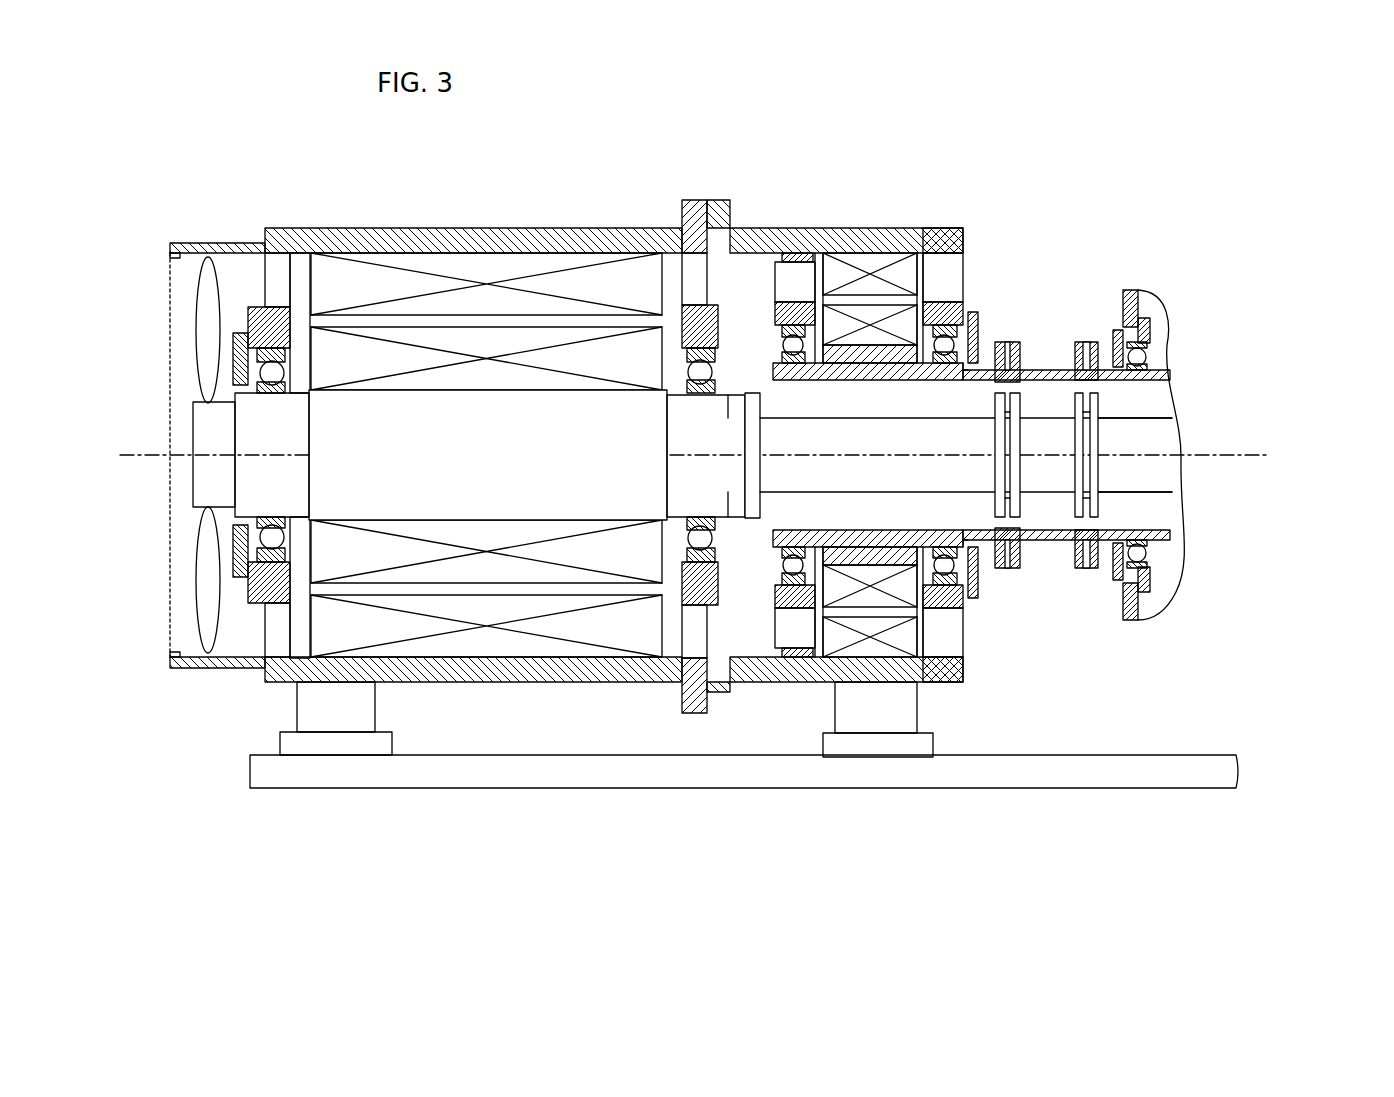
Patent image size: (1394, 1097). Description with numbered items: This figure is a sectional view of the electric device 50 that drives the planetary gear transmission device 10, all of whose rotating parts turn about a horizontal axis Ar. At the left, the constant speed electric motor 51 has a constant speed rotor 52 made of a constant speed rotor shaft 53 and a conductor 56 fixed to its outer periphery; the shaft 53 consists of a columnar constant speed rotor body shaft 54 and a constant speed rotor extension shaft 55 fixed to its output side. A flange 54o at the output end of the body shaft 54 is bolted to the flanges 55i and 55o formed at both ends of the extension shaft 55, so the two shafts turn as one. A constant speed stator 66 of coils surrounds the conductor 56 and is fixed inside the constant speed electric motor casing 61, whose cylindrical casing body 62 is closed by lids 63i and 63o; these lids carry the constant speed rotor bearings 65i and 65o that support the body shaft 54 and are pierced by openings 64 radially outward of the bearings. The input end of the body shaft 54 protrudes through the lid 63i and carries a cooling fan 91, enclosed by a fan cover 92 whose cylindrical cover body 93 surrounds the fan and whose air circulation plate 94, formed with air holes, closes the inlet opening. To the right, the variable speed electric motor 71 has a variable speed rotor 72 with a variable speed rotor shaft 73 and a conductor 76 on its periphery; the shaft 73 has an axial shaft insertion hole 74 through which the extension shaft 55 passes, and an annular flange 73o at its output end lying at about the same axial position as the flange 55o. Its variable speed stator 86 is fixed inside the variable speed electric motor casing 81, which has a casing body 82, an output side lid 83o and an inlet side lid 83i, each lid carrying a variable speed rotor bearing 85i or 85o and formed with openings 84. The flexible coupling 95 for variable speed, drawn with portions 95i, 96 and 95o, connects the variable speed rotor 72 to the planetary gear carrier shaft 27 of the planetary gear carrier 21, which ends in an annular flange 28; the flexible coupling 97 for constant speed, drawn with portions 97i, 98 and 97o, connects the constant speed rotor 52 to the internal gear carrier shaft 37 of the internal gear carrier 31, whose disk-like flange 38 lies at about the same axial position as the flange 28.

The transmission device 10 is at (1192, 576).
The planetary gear carrier 21 is at (1162, 368).
The planetary gear carrier shaft 27 is at (1258, 450).
The flange 28 is at (1136, 290).
The internal gear carrier 31 is at (1157, 478).
The internal gear carrier shaft 37 is at (1242, 470).
The flange 38 is at (1097, 506).
The electric device 50 is at (473, 479).
The constant speed electric motor 51 is at (473, 479).
The constant speed rotor 52 is at (488, 568).
The constant speed rotor shaft 53 is at (476, 480).
The constant speed rotor body shaft 54 is at (469, 449).
The flange 54o is at (575, 498).
The constant speed rotor extension shaft 55 is at (691, 472).
The flange 55i is at (757, 506).
The flange 55o is at (987, 624).
The conductor 56 is at (430, 490).
The constant speed electric motor casing 61 is at (473, 389).
The casing body 62 is at (513, 221).
The input side lid 63i is at (283, 232).
The output side lid 63o is at (695, 204).
The openings 64 is at (282, 273).
The constant speed rotor bearing 65i is at (285, 373).
The constant speed rotor bearing 65o is at (688, 372).
The constant speed stator 66 is at (459, 270).
The variable speed electric motor 71 is at (952, 222).
The variable speed rotor 72 is at (971, 625).
The variable speed rotor shaft 73 is at (838, 548).
The flange 73o is at (1000, 342).
The shaft insertion hole 74 is at (772, 495).
The conductor 76 is at (878, 597).
The variable speed electric motor casing 81 is at (883, 369).
The casing body 82 is at (885, 240).
The inlet side lid 83i is at (805, 255).
The output side lid 83o is at (937, 228).
The openings 84 is at (790, 272).
The variable speed rotor bearing 85i is at (783, 342).
The variable speed rotor bearing 85o is at (972, 322).
The variable speed stator 86 is at (902, 275).
The cooling fan 91 is at (208, 265).
The fan cover 92 is at (189, 477).
The cover body 93 is at (193, 670).
The air circulation plate 94 is at (170, 608).
The flexible coupling for variable speed 95 is at (1131, 314).
The inner coupling ring 95i is at (1053, 370).
The outer coupling ring 95o is at (1093, 342).
The coupling spacer 96 is at (1076, 342).
The flexible coupling for constant speed 97 is at (1082, 699).
The inner coupling ring 97i is at (1022, 512).
The outer coupling ring 97o is at (1078, 510).
The coupling spacer 98 is at (1042, 493).
The axis Ar is at (1250, 453).